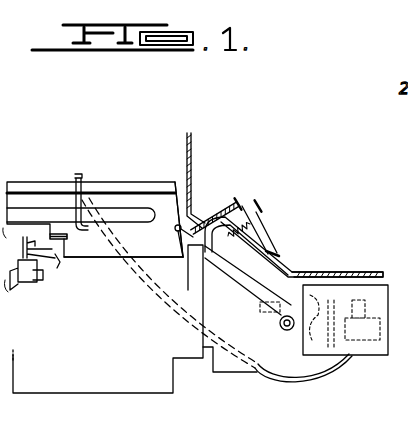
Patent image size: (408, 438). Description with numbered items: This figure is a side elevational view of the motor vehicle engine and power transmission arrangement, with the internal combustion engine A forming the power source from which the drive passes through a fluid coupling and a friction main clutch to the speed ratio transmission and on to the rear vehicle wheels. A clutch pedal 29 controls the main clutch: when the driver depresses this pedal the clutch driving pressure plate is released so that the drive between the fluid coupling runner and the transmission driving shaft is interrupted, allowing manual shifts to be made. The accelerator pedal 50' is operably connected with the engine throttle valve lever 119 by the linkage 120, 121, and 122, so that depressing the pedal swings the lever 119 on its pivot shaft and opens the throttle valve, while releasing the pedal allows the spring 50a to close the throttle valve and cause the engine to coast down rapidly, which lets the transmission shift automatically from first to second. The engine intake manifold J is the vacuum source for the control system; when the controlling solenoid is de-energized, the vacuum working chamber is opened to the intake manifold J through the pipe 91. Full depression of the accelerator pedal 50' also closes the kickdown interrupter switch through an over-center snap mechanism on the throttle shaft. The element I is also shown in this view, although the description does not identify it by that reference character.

The pipe 91 is at (76, 176).
The engine intake manifold J is at (120, 212).
The internal combustion engine A is at (144, 189).
The engine throttle valve lever 119 is at (66, 247).
The linkage 121 is at (176, 231).
The linkage 122 is at (150, 258).
The linkage 120 is at (214, 218).
The clutch pedal 29 is at (261, 201).
The spring 50a is at (264, 222).
The accelerator pedal 50' is at (276, 231).
The horizontal plate I is at (364, 271).